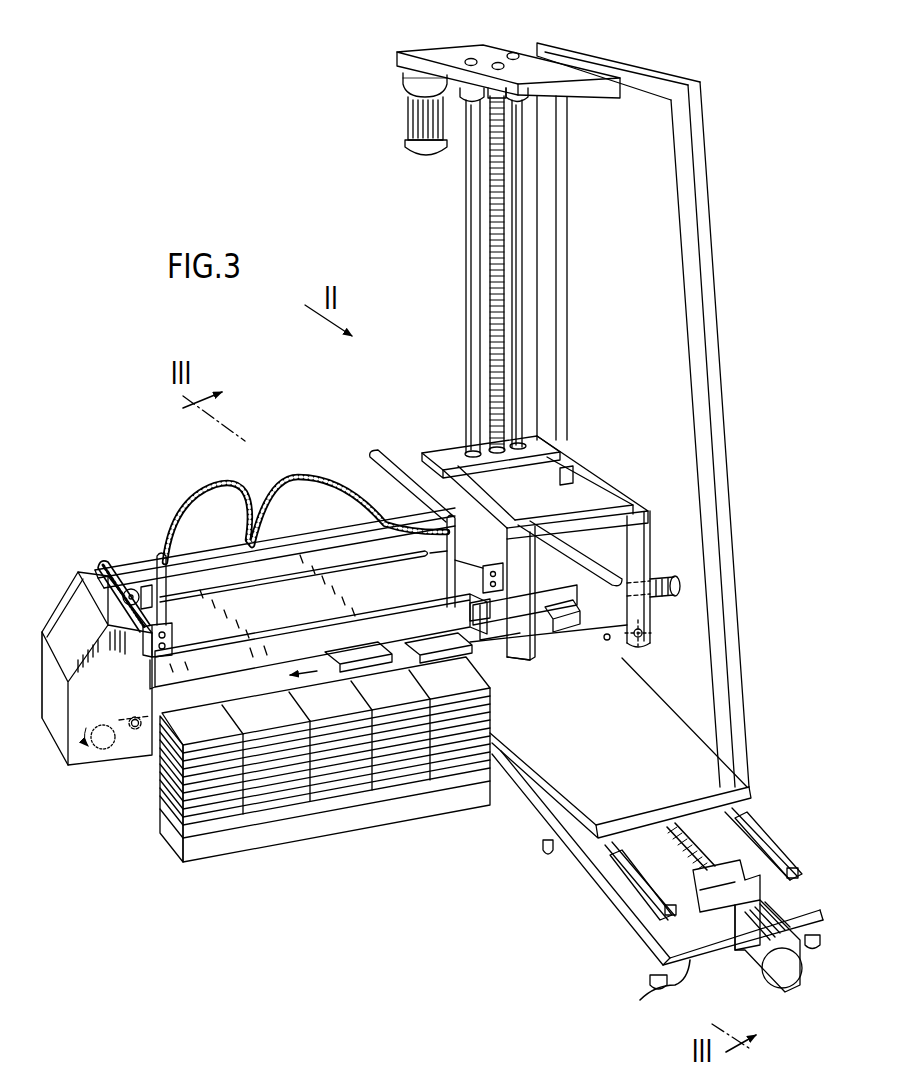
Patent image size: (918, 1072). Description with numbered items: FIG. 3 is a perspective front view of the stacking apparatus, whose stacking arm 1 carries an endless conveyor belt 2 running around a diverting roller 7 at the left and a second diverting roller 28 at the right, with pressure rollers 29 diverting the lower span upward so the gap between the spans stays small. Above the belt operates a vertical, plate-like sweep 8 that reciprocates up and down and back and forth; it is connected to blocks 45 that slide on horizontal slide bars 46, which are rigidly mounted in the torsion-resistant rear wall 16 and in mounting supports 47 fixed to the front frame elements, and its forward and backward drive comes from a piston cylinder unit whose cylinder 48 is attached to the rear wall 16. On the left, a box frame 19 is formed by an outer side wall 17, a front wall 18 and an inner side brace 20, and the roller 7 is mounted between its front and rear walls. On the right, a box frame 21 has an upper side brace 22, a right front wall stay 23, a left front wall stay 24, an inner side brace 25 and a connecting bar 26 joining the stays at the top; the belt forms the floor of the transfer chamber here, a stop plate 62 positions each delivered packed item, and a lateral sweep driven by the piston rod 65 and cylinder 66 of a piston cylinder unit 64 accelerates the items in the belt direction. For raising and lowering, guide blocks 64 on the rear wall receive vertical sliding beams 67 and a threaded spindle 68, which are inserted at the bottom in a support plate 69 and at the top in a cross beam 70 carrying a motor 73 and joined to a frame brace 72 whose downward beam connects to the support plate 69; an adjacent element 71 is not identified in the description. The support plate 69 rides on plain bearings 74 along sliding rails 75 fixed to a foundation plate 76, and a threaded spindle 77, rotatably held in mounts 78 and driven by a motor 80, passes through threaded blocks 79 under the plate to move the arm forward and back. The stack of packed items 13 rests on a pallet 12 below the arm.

The stacking arm 1 is at (163, 505).
The endless conveyor belt 2 is at (212, 692).
The diverting roller 7 is at (104, 750).
The sweep 8 is at (267, 653).
The pallet 12 is at (333, 830).
The stack of packed items 13 is at (280, 787).
The rear wall 16 is at (227, 600).
The outer side wall 17 is at (58, 722).
The front wall 18 is at (140, 742).
The box frame 19 is at (53, 596).
The inner side brace 20 is at (102, 565).
The box frame 21 is at (600, 452).
The upper side brace 22 is at (610, 482).
The right front wall stay 23 is at (652, 522).
The left front wall stay 24 is at (520, 652).
The inner side brace 25 is at (463, 482).
The connecting bar 26 is at (600, 517).
The second diverting roller 28 is at (641, 640).
The pressure rollers 29 is at (606, 641).
The block 45 is at (497, 562).
The slide bars 46 is at (458, 562).
The mounting supports 47 is at (173, 642).
The cylinder 48 is at (375, 452).
The stop plate 62 is at (556, 600).
The guide block 64 is at (458, 450).
The piston rod 65 is at (683, 562).
The cylinder 66 is at (677, 596).
The sliding beams 67 is at (512, 302).
The threaded spindle 68 is at (490, 240).
The support plate 69 is at (738, 790).
The cross beam 70 is at (578, 90).
The drive motor 71 is at (433, 167).
The frame brace 72 is at (552, 233).
The motor 73 is at (412, 120).
The plain bearings 74 is at (740, 815).
The sliding rails 75 is at (760, 848).
The foundation plate 76 is at (660, 950).
The threaded spindle 77 is at (640, 1000).
The mounts 78 is at (700, 930).
The threaded blocks 79 is at (666, 825).
The motor 80 is at (755, 950).